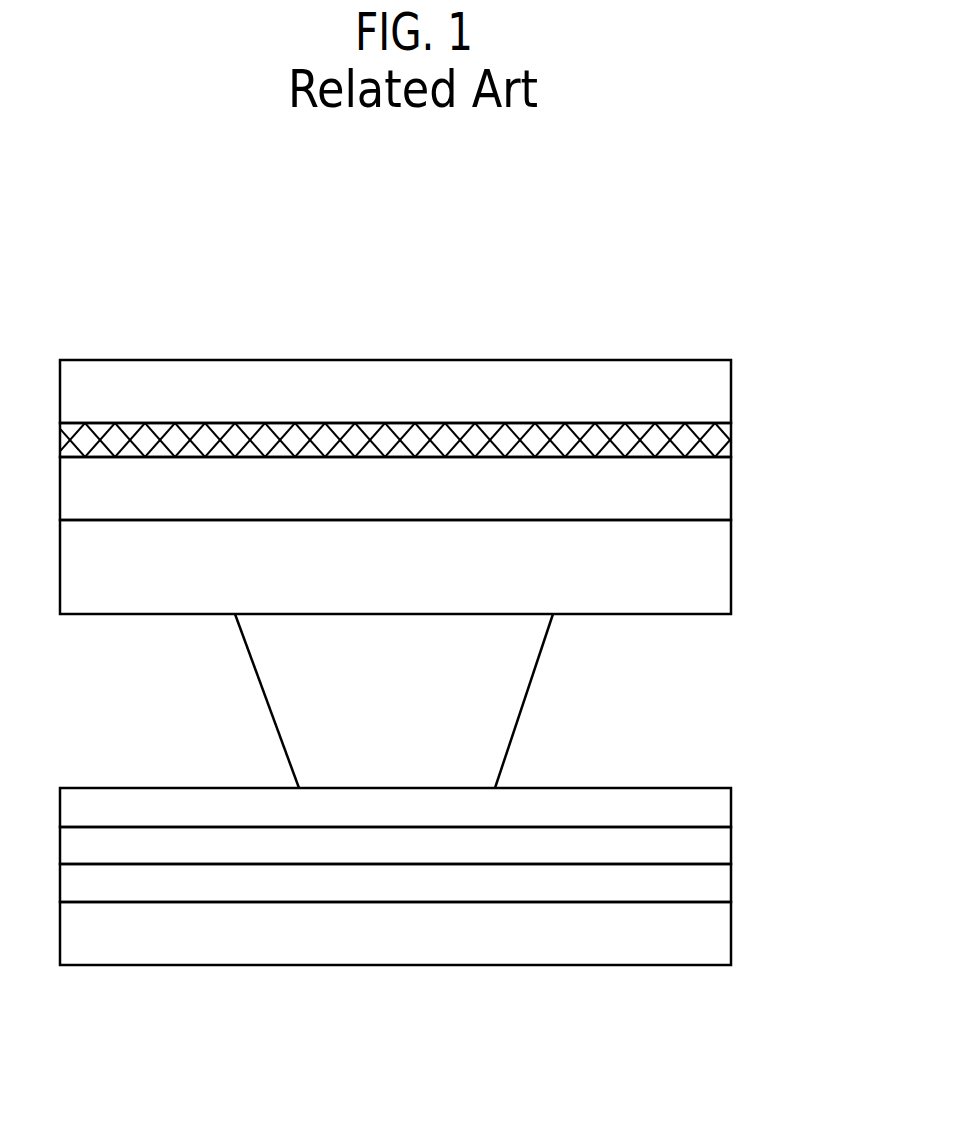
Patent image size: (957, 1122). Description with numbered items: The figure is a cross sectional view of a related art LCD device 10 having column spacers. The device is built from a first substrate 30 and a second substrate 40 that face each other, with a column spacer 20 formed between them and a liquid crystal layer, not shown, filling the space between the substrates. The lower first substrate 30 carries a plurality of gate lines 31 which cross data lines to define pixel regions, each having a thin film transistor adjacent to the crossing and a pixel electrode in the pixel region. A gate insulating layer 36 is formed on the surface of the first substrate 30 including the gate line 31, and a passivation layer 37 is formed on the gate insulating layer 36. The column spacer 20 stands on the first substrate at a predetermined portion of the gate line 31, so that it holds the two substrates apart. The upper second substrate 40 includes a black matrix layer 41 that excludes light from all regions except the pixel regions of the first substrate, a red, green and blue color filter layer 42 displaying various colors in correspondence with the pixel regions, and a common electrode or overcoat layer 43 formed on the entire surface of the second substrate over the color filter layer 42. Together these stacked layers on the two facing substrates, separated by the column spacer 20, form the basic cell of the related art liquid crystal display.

The liquid crystal display device (related art) 10 is at (701, 287).
The column spacer 20 is at (512, 708).
The first substrate 30 is at (722, 935).
The gate line 31 is at (722, 887).
The gate insulating layer 36 is at (722, 847).
The passivation layer 37 is at (722, 810).
The second substrate 40 is at (712, 399).
The black matrix layer 41 is at (712, 448).
The R/G/B color filter layer 42 is at (712, 503).
The common electrode or overcoat layer 43 is at (712, 577).